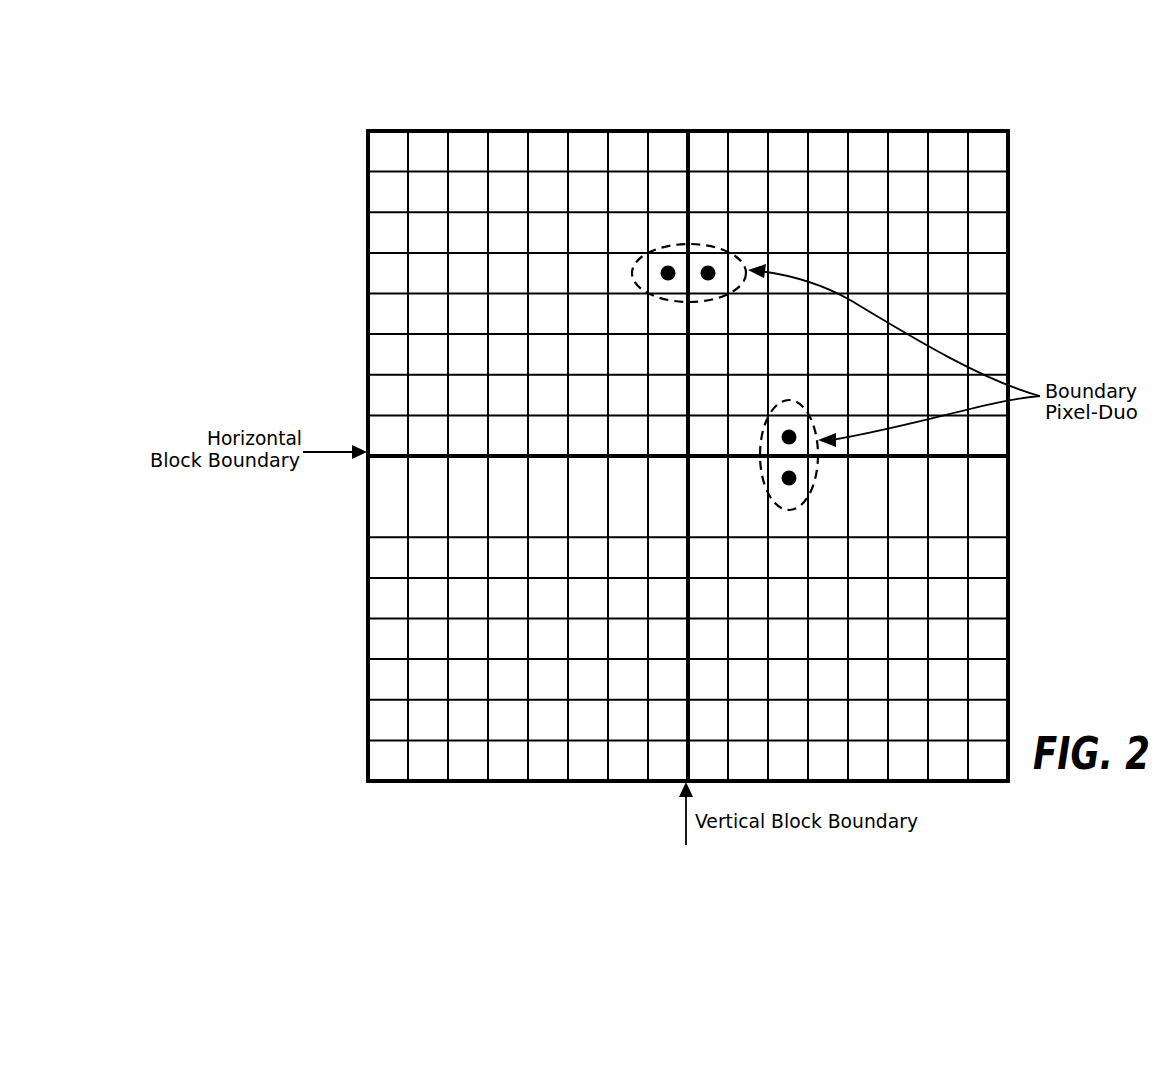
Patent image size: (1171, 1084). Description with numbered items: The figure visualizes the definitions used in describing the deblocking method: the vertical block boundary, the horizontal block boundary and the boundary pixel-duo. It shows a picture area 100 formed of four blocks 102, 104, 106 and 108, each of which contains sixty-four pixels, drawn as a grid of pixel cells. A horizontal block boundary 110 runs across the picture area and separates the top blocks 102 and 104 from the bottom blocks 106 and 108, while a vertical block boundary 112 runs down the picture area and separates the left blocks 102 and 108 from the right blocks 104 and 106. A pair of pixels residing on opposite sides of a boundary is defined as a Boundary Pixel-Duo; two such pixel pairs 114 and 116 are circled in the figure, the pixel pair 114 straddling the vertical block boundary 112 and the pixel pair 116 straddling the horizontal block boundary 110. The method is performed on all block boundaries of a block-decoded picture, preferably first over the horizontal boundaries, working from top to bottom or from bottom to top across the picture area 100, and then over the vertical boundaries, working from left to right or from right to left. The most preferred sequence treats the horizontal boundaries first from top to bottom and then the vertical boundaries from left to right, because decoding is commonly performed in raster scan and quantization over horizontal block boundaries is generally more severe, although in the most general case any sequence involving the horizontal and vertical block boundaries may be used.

The picture area 100 is at (1033, 99).
The block 102 is at (366, 262).
The block 104 is at (1012, 268).
The block 106 is at (1012, 598).
The block 108 is at (366, 639).
The horizontal block boundary 110 is at (1012, 460).
The vertical block boundary 112 is at (689, 130).
The boundary pixel-duo 114 is at (662, 300).
The boundary pixel-duo 116 is at (790, 510).